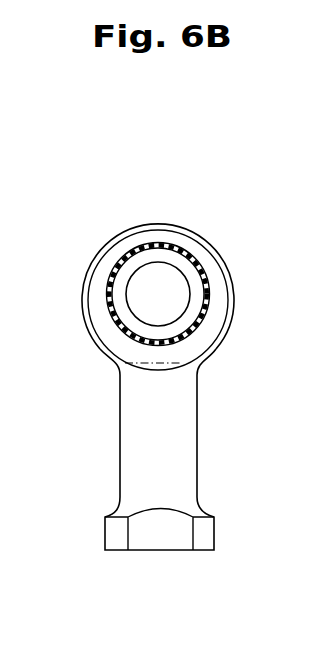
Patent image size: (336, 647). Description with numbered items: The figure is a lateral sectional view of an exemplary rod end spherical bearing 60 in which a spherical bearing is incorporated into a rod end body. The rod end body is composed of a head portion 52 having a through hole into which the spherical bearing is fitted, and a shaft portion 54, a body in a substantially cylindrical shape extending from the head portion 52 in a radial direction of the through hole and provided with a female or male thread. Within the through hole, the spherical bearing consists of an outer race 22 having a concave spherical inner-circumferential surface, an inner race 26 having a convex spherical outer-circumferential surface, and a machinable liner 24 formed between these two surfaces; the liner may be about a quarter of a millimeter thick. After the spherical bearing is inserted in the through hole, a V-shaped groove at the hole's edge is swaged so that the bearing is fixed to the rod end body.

The rod end spherical bearing 60 is at (165, 359).
The head portion 52 is at (119, 237).
The shaft portion 54 is at (142, 434).
The outer race 22 is at (184, 244).
The machinable liner 24 is at (120, 261).
The inner race 26 is at (178, 324).